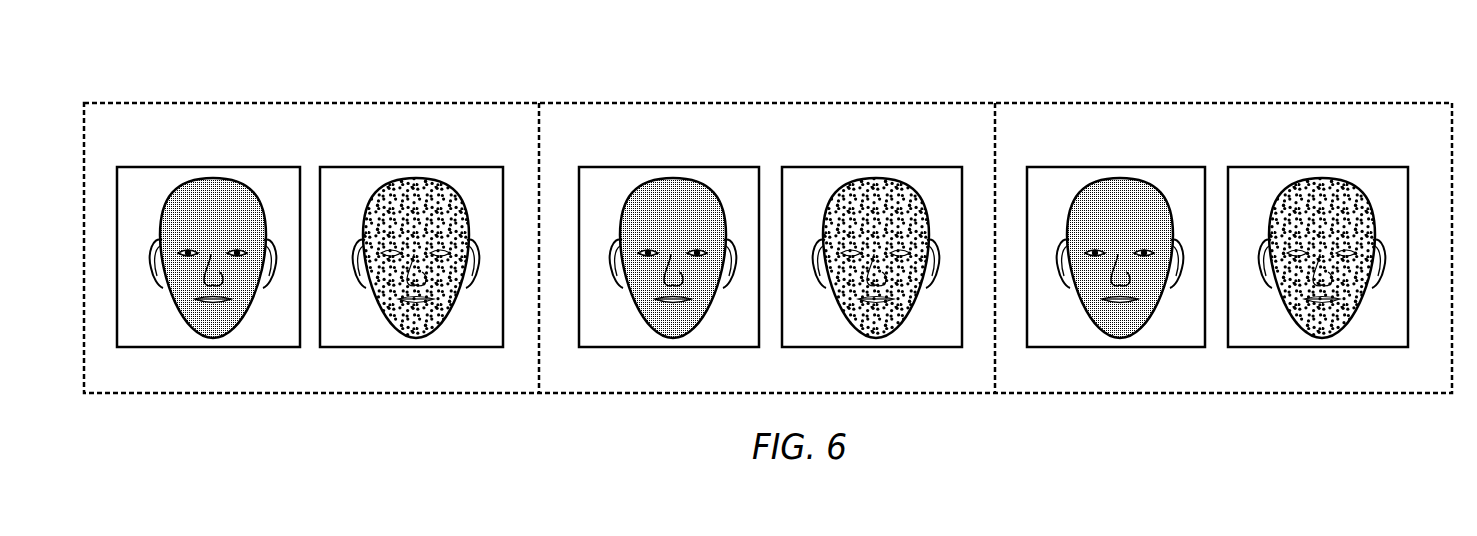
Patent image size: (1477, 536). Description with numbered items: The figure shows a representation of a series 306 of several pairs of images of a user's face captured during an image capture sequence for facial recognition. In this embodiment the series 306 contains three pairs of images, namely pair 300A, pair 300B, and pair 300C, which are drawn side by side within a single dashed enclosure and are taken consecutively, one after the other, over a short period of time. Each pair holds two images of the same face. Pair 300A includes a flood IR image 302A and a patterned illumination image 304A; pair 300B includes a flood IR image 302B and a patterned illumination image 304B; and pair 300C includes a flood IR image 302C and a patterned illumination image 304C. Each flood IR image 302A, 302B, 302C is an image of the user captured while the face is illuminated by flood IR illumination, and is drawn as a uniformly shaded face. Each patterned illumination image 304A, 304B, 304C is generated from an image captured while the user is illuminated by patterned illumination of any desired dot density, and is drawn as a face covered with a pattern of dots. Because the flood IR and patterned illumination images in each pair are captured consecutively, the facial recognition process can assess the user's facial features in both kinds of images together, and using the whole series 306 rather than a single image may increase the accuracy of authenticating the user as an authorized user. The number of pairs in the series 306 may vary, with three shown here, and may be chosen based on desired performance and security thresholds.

The series 306 is at (163, 74).
The pair 300A is at (515, 385).
The pair 300B is at (973, 385).
The pair 300C is at (1428, 385).
The flood IR image 302A is at (255, 166).
The patterned illumination image 304A is at (458, 166).
The flood IR image 302B is at (715, 166).
The patterned illumination image 304B is at (918, 166).
The flood IR image 302C is at (1163, 166).
The patterned illumination image 304C is at (1365, 166).